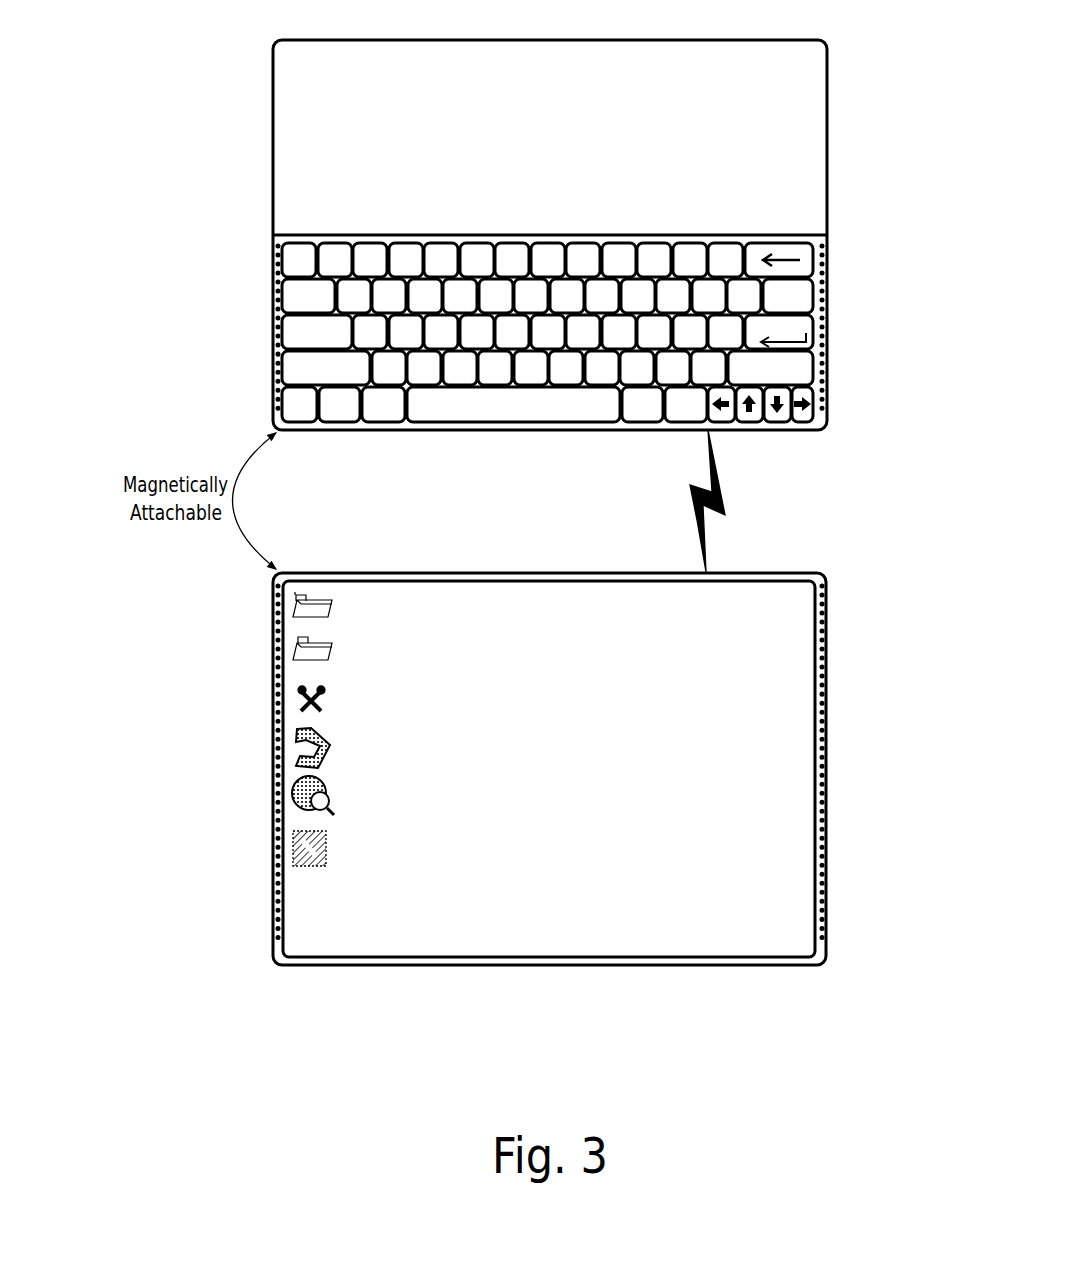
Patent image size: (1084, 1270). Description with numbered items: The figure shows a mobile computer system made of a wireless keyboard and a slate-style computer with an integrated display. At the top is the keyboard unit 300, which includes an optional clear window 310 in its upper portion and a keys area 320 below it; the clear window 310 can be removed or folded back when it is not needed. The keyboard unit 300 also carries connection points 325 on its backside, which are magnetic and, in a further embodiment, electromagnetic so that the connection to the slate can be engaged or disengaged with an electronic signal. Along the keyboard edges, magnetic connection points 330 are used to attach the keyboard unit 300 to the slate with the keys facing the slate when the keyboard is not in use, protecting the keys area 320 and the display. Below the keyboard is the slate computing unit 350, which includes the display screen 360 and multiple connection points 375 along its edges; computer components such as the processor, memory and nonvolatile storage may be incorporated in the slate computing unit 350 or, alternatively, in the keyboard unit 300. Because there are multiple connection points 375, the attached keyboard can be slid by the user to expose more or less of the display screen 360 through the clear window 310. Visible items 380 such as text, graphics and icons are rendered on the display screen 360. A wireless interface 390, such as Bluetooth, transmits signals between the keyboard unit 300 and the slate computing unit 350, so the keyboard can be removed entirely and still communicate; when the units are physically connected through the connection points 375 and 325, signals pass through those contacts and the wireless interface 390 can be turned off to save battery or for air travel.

The keyboard unit 300 is at (567, 27).
The clear window 310 is at (550, 182).
The keys area 320 is at (826, 436).
The connection points 325 is at (268, 57).
The magnetic connection points 330 is at (272, 361).
The slate computing unit 350 is at (598, 561).
The display screen 360 is at (549, 769).
The multiple connection points 375 is at (272, 870).
The visible items 380 is at (348, 755).
The wireless interface 390 is at (723, 490).